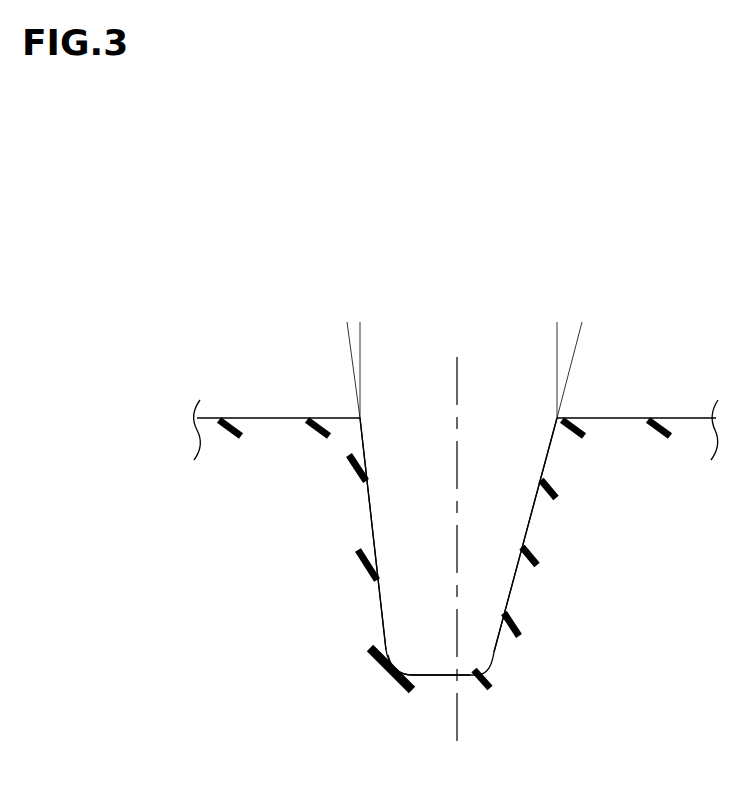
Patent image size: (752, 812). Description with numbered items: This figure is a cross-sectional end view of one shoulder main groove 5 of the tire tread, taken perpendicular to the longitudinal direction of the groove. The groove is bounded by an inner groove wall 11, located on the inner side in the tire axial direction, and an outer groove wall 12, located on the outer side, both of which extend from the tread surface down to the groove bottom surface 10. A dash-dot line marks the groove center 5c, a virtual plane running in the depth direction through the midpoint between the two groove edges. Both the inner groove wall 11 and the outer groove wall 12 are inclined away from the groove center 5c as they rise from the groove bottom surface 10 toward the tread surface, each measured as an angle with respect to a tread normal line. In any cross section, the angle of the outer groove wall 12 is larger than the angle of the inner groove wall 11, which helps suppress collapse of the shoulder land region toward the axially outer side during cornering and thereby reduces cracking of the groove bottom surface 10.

The shoulder main groove 5 is at (425, 455).
The groove center 5c is at (458, 383).
The groove bottom surface 10 is at (423, 658).
The inner groove wall 11 is at (368, 500).
The outer groove wall 12 is at (527, 525).